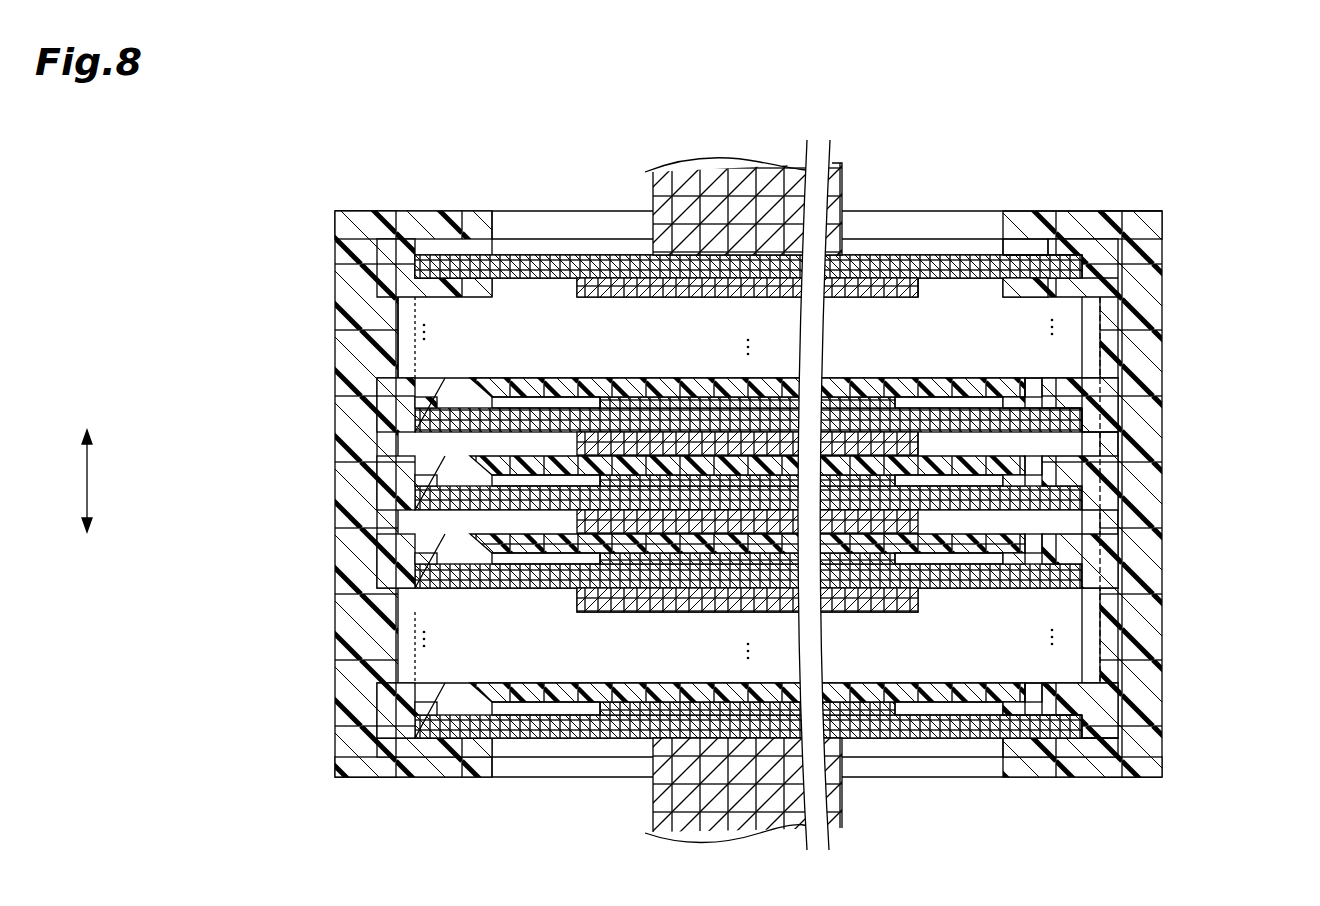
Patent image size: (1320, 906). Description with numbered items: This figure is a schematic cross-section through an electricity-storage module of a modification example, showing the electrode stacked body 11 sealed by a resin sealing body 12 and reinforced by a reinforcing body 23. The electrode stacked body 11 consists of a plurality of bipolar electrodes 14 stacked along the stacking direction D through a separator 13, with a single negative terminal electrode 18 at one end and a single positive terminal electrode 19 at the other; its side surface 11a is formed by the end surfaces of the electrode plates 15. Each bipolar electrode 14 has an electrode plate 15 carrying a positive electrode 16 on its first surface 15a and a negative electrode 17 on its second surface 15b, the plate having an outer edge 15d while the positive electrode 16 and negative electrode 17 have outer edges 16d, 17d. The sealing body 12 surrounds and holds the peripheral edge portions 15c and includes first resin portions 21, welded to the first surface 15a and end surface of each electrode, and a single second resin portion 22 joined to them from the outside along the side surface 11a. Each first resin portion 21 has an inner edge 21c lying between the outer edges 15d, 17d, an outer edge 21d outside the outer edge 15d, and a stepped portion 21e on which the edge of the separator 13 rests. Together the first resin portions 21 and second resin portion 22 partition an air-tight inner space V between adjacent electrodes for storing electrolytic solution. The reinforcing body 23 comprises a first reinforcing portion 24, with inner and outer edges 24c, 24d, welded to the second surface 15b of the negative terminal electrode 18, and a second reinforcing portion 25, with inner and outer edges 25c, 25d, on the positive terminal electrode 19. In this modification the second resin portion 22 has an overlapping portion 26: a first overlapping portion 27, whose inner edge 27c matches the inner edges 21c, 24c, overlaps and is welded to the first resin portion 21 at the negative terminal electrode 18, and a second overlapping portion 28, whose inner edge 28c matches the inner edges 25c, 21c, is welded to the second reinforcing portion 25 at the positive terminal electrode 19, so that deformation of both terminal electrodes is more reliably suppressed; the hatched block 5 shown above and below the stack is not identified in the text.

The electrode terminal 5 is at (745, 185).
The electrode stacked body 11 is at (910, 230).
The side surface 11a is at (340, 320).
The sealing body 12 is at (1168, 213).
The separator 13 is at (1085, 350).
The bipolar electrode 14 is at (160, 345).
The electrode plate 15 is at (430, 265).
The first surface 15a is at (1063, 256).
The second surface 15b is at (1005, 287).
The peripheral edge portion 15c is at (1095, 262).
The outer edge 15d is at (1135, 240).
The positive electrode 16 is at (600, 378).
The outer edge 16d is at (905, 392).
The negative electrode 17 is at (590, 288).
The outer edge 17d is at (928, 283).
The negative terminal electrode 18 is at (255, 247).
The positive terminal electrode 19 is at (255, 700).
The first resin portion 21 is at (405, 240).
The inner edge 21c is at (995, 242).
The outer edge 21d is at (1135, 250).
The stepped portion 21e is at (1035, 385).
The second resin portion 22 is at (355, 604).
The reinforcing body 23 is at (420, 499).
The first reinforcing portion 24 is at (403, 240).
The inner edge 24c is at (972, 262).
The outer edge 24d is at (1060, 275).
The second reinforcing portion 25 is at (435, 760).
The inner edge 25c is at (1003, 757).
The outer edge 25d is at (1110, 760).
The overlapping portion 26 is at (748, 494).
The first overlapping portion 27 is at (455, 213).
The inner edge 27c is at (495, 225).
The second overlapping portion 28 is at (465, 770).
The inner edge 28c is at (500, 768).
The inner space V is at (1092, 470).
The stacking direction D is at (85, 480).